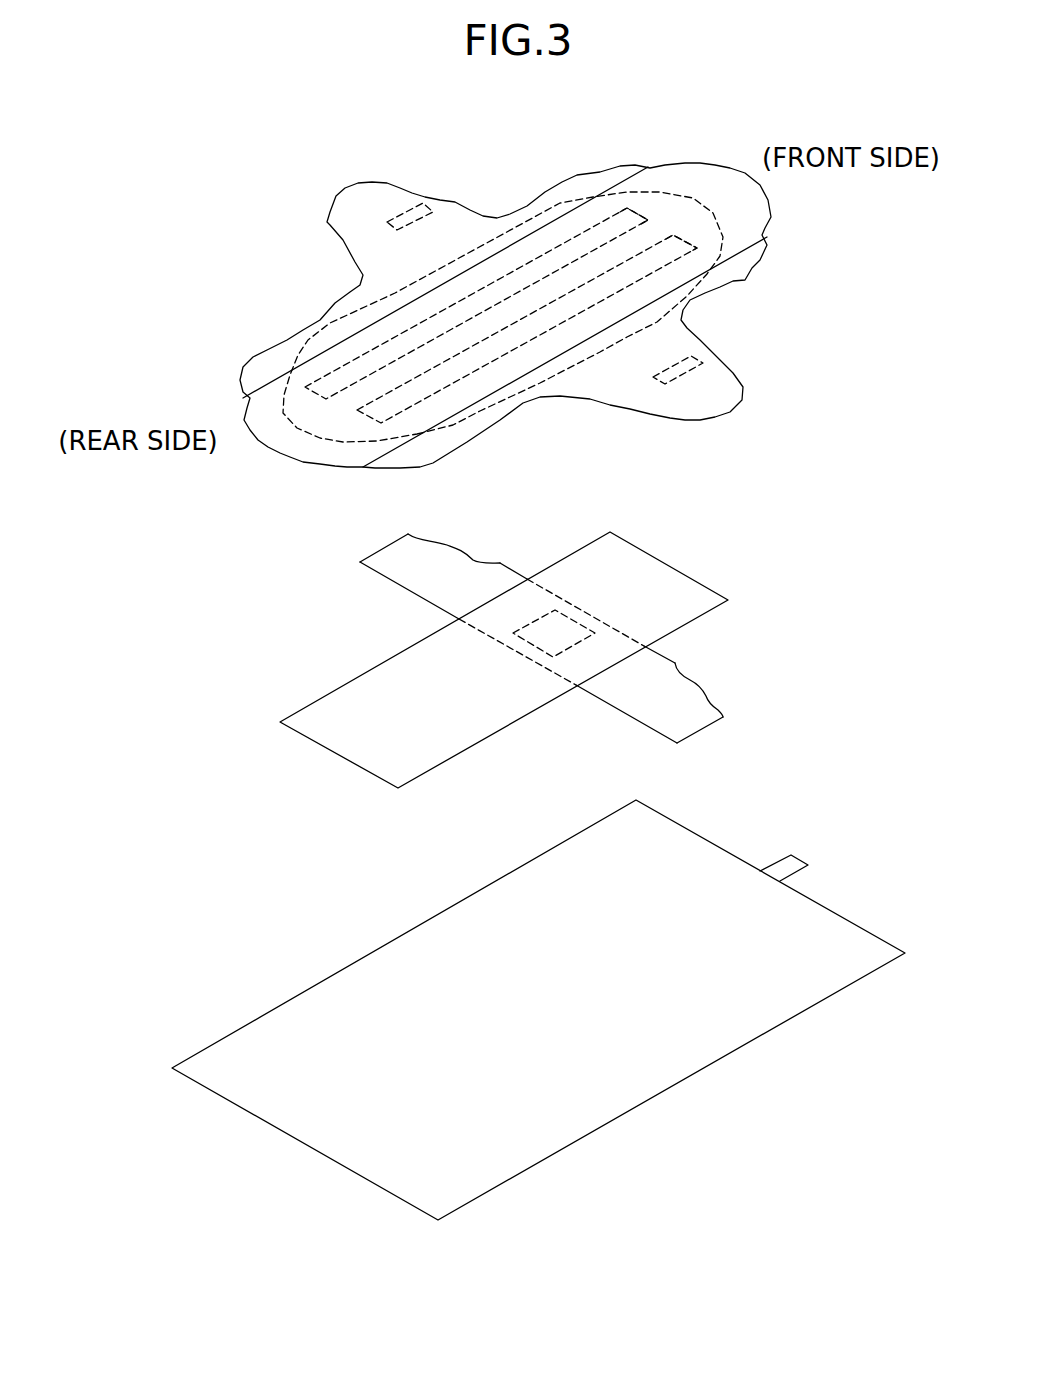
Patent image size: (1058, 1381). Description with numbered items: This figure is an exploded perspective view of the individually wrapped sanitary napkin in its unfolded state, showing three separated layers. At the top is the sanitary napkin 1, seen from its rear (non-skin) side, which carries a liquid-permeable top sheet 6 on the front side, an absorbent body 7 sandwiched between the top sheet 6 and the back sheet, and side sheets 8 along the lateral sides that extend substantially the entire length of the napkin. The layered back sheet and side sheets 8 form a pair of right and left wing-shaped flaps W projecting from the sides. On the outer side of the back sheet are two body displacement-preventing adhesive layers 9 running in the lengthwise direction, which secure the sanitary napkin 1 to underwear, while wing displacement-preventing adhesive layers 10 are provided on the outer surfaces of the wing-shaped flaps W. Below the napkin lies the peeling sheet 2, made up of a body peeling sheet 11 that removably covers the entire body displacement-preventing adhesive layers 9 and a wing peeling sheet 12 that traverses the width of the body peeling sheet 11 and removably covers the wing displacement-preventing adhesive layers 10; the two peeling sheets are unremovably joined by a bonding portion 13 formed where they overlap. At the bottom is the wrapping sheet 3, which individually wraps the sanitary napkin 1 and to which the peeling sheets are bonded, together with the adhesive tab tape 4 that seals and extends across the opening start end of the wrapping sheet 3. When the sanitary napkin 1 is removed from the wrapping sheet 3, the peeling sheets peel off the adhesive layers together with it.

The sanitary napkin 1 is at (250, 338).
The peeling sheet 2 is at (334, 685).
The wrapping sheet 3 is at (240, 1042).
The adhesive tab tape 4 is at (786, 860).
The top sheet 6 is at (276, 440).
The absorbent body 7 is at (347, 450).
The side sheets 8 is at (342, 320).
The body displacement-preventing adhesive layers 9 is at (613, 216).
The wing displacement-preventing adhesive layers 10 is at (437, 208).
The body peeling sheet 11 is at (703, 598).
The wing peeling sheet 12 is at (690, 709).
The bonding portion 13 is at (567, 603).
The wing-shaped flaps W is at (318, 222).